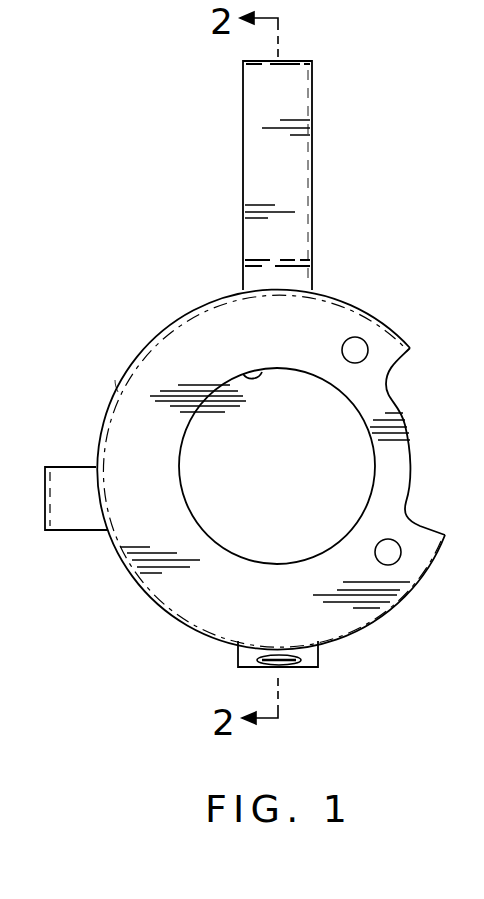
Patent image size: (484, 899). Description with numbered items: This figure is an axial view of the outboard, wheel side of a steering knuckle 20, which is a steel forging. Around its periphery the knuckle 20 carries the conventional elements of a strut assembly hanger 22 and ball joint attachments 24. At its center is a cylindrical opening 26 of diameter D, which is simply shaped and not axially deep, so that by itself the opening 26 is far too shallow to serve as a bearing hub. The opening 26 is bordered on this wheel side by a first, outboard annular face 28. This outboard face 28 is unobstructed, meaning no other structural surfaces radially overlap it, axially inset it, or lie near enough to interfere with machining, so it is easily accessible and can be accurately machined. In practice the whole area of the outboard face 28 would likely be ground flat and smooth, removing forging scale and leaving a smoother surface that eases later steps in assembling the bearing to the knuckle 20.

The steering knuckle 20 is at (333, 302).
The strut assembly hanger 22 is at (295, 168).
The ball joint attachments 24 is at (77, 515).
The central cylindrical opening 26 is at (243, 376).
The outboard annular face 28 is at (143, 377).
The diameter D is at (346, 397).